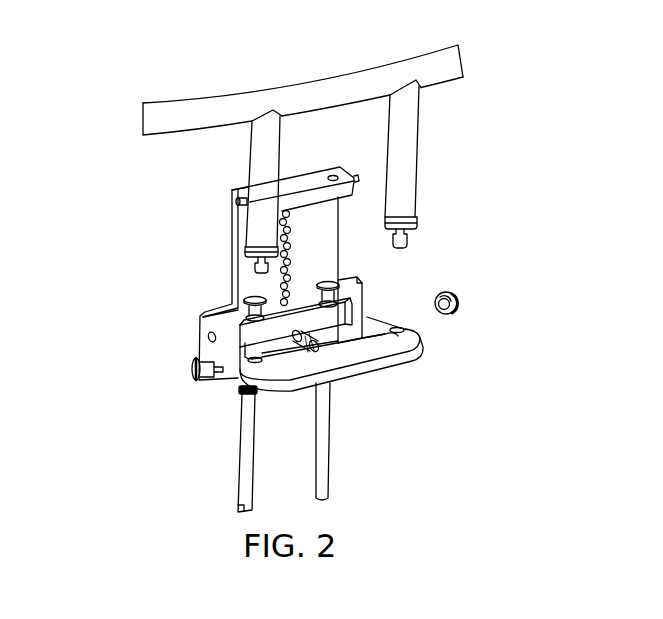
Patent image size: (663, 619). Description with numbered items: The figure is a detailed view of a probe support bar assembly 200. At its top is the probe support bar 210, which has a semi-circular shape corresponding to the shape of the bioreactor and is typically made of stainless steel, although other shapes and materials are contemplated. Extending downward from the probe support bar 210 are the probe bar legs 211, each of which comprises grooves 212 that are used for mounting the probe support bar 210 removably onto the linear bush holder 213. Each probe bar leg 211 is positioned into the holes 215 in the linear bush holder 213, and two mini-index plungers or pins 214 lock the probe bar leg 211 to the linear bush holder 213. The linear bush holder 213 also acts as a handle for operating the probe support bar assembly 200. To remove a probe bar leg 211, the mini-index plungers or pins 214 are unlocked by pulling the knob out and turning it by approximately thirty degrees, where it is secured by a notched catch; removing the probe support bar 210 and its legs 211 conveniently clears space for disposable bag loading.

The probe support bar assembly 200 is at (204, 62).
The probe support bar 210 is at (142, 117).
The probe bar leg 211 is at (249, 167).
The grooves 212 is at (250, 256).
The linear bush holder 213 is at (282, 367).
The mini-index plunger or pin 214 is at (458, 305).
The holes 215 is at (420, 342).